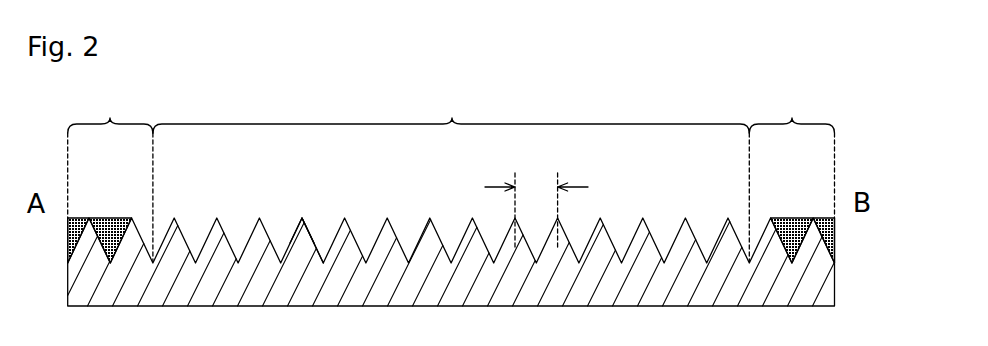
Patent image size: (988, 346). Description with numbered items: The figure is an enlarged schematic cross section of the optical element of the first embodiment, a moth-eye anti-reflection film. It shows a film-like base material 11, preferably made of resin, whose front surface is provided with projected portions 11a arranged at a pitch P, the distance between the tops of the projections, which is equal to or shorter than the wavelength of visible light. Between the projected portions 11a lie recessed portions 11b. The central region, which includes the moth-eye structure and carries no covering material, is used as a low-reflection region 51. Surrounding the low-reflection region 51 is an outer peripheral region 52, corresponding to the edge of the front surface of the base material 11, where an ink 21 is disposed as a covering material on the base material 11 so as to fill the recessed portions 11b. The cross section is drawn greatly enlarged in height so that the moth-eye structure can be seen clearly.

The base material 11 is at (822, 288).
The projected portions 11a is at (302, 218).
The recessed portions 11b is at (322, 238).
The ink 21 is at (791, 228).
The low-reflection region 51 is at (451, 111).
The outer peripheral region 52 is at (451, 175).
The pitch P is at (536, 197).